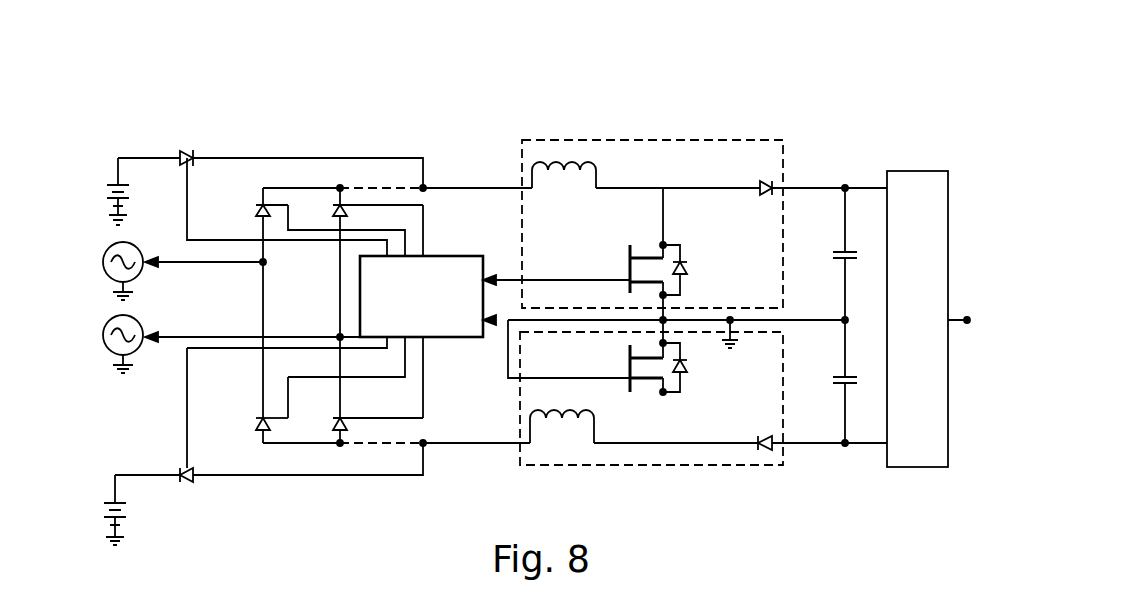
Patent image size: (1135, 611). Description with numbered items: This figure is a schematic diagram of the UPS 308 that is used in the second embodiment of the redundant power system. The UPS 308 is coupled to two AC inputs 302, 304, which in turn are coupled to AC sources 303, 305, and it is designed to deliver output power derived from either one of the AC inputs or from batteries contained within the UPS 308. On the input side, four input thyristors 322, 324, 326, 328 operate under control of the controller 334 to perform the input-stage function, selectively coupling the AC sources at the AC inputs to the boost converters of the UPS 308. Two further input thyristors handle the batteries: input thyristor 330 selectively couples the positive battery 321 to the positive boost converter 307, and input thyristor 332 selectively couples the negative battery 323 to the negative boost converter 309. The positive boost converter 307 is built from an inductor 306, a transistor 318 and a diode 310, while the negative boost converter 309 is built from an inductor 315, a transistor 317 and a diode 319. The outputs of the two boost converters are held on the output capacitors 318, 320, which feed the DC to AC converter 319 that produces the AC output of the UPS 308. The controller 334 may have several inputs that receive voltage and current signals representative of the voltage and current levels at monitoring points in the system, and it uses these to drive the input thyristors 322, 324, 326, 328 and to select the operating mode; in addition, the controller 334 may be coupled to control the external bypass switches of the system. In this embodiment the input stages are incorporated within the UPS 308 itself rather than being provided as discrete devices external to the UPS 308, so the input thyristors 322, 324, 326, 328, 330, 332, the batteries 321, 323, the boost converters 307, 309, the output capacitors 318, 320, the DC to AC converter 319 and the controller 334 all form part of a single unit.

The AC input 302 is at (148, 333).
The AC source 303 is at (135, 355).
The AC input 304 is at (148, 270).
The AC source 305 is at (140, 248).
The inductor 306 is at (600, 165).
The positive boost converter 307 is at (713, 140).
The UPS 308 is at (822, 112).
The negative boost converter 309 is at (713, 466).
The diode 310 is at (765, 196).
The inductor 315 is at (596, 412).
The transistor 317 is at (688, 367).
The transistor 318 is at (688, 266).
The DC to AC converter 319 is at (936, 171).
The output capacitor 320 is at (836, 376).
The positive battery 321 is at (121, 183).
The input thyristor 322 is at (256, 422).
The negative battery 323 is at (122, 510).
The input thyristor 324 is at (333, 421).
The input thyristor 326 is at (256, 212).
The input thyristor 328 is at (333, 213).
The input thyristor 330 is at (190, 152).
The input thyristor 332 is at (190, 485).
The controller 334 is at (440, 256).